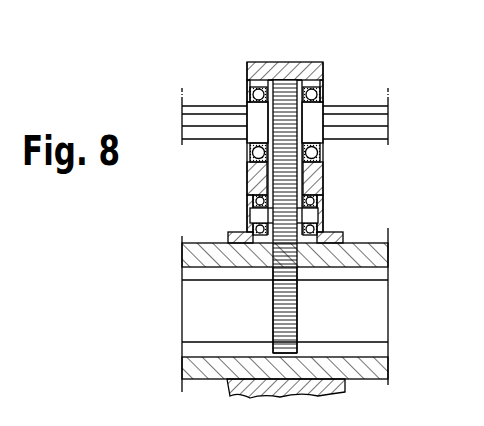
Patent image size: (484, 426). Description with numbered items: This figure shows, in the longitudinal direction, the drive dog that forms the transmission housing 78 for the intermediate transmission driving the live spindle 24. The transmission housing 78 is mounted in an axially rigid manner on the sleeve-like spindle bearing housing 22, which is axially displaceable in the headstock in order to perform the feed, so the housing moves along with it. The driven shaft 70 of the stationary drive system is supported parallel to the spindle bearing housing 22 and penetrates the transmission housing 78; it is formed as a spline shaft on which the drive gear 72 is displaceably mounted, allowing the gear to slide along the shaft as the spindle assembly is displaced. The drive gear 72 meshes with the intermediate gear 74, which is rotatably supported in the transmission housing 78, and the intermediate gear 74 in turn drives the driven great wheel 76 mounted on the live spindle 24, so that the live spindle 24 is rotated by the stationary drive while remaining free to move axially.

The spindle bearing housing 22 is at (366, 243).
The live spindle 24 is at (375, 280).
The driven shaft 70 is at (353, 109).
The drive gear 72 is at (283, 100).
The intermediate gear 74 is at (282, 197).
The driven great wheel 76 is at (285, 304).
The transmission housing 78 is at (318, 68).